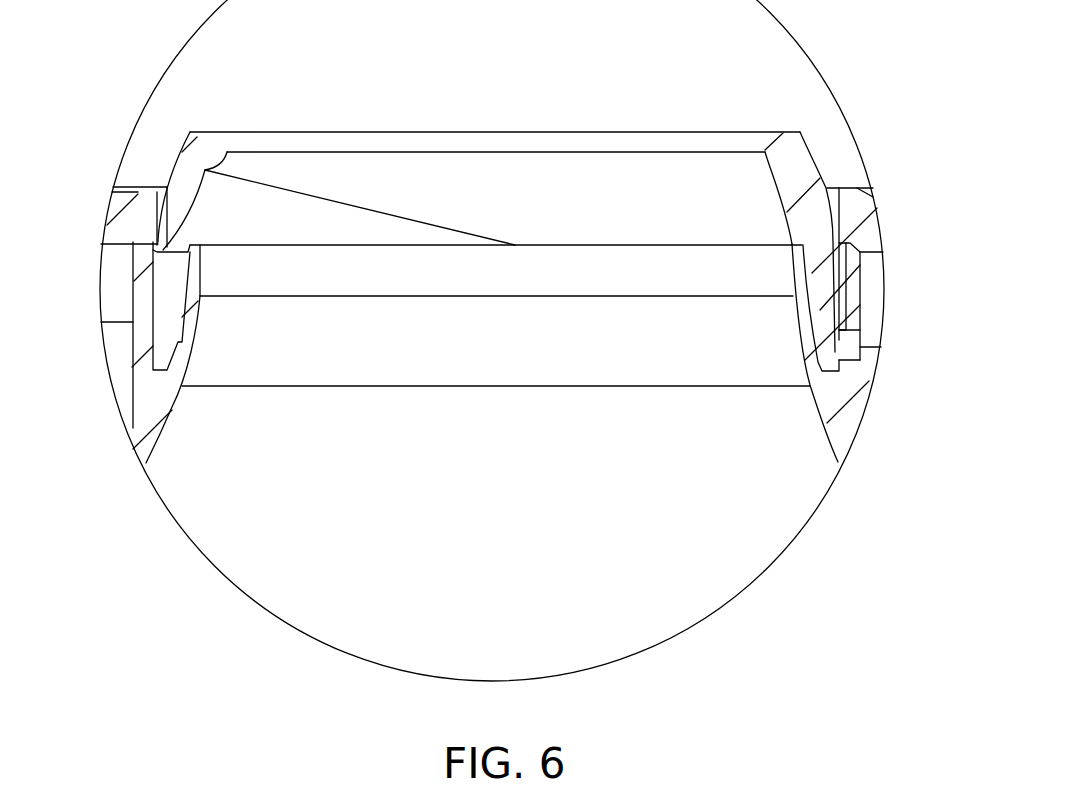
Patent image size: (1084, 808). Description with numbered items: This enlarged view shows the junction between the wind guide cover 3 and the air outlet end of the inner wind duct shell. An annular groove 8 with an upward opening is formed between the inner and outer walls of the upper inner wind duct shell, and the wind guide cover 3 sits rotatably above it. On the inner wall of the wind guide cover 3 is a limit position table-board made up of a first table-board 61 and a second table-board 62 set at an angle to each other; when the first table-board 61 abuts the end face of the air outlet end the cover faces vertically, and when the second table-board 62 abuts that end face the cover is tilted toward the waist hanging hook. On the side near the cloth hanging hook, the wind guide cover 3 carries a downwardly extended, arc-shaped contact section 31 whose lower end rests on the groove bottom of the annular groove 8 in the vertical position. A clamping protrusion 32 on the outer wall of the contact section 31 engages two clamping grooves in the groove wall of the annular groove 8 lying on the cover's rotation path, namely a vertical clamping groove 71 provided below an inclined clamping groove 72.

The wind guide cover 3 is at (500, 140).
The first table-board 61 is at (578, 244).
The second table-board 62 is at (315, 197).
The annular groove 8 is at (168, 313).
The vertical clamping groove 71 is at (850, 350).
The inclined clamping groove 72 is at (860, 237).
The contact section 31 is at (822, 307).
The clamping protrusion 32 is at (836, 341).